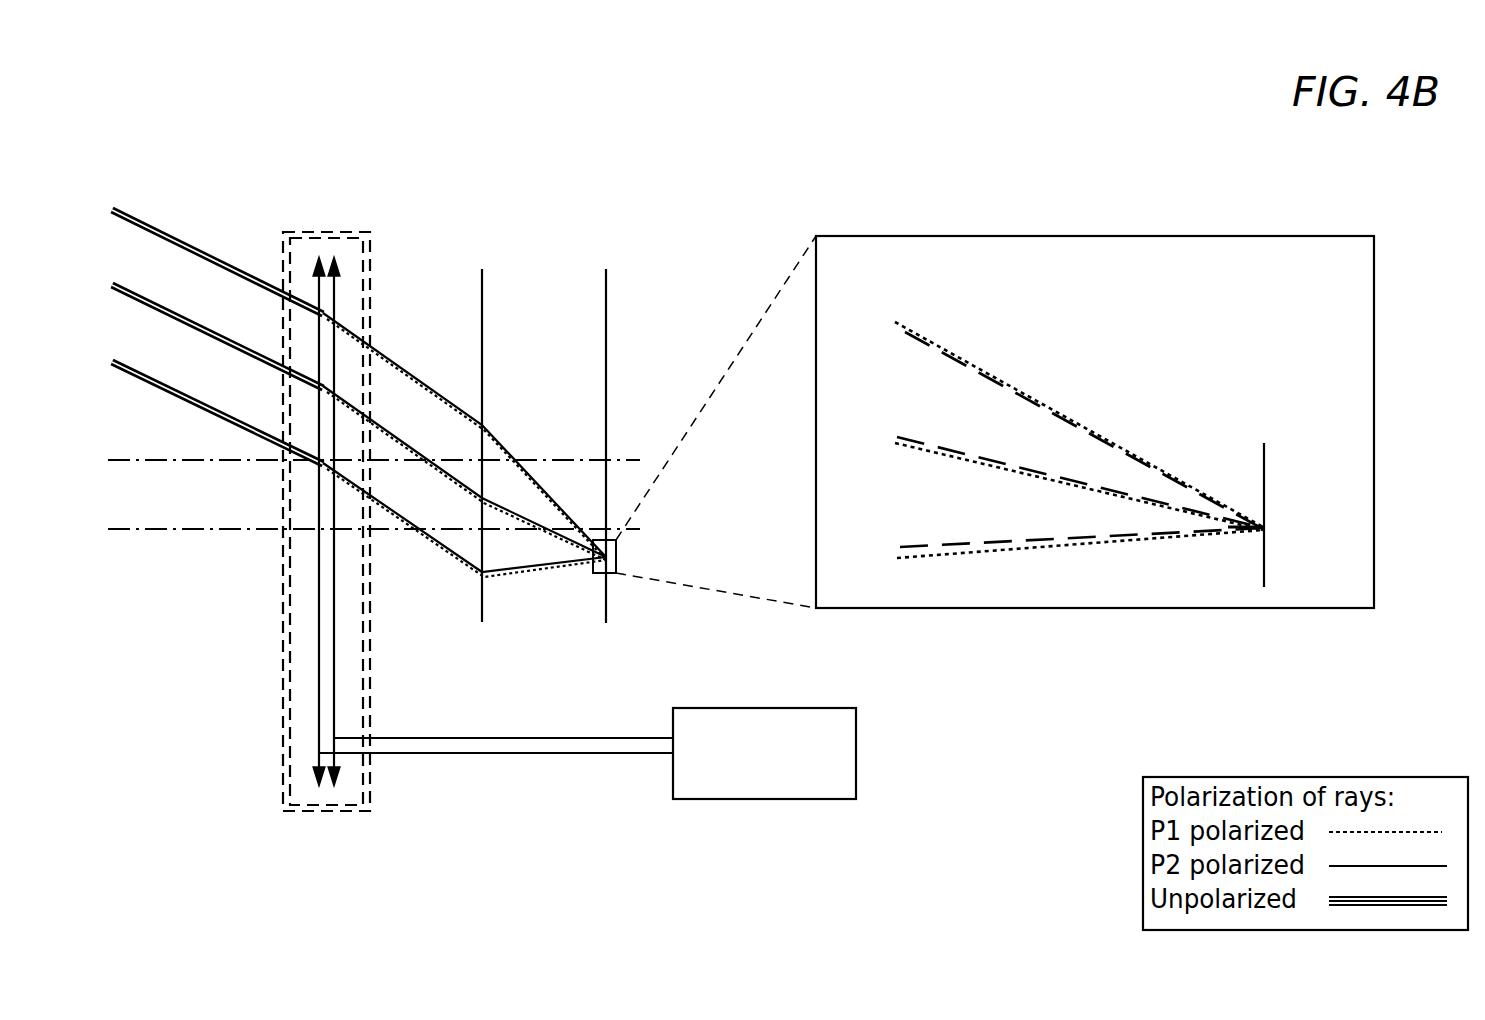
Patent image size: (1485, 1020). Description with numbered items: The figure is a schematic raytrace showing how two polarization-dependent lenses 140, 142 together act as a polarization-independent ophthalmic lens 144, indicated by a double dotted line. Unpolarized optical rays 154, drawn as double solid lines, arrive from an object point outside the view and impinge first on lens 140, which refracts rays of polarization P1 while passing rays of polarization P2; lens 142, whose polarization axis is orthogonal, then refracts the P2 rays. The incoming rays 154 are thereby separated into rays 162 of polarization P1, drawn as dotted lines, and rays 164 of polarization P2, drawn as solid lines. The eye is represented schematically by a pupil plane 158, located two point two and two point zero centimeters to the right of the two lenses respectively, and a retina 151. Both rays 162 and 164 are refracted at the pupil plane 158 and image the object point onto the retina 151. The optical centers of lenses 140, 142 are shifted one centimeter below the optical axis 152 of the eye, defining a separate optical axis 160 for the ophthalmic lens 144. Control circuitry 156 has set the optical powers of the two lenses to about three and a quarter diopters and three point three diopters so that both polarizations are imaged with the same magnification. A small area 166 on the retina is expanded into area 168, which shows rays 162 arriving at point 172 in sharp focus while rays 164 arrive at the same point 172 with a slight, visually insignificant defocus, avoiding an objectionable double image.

The polarization-dependent lens 140 is at (319, 257).
The polarization-dependent lens 142 is at (334, 257).
The polarization-independent ophthalmic lens 144 is at (285, 790).
The retina 151 is at (606, 380).
The optical axis 152 is at (567, 457).
The optical rays 154 is at (150, 223).
The control circuitry 156 is at (760, 801).
The pupil plane 158 is at (482, 295).
The optical axis 160 is at (165, 533).
The rays of polarization P1 162 is at (462, 412).
The rays of polarization P2 164 is at (398, 360).
The area 166 is at (616, 558).
The area 168 is at (905, 234).
The point 172 is at (1264, 533).